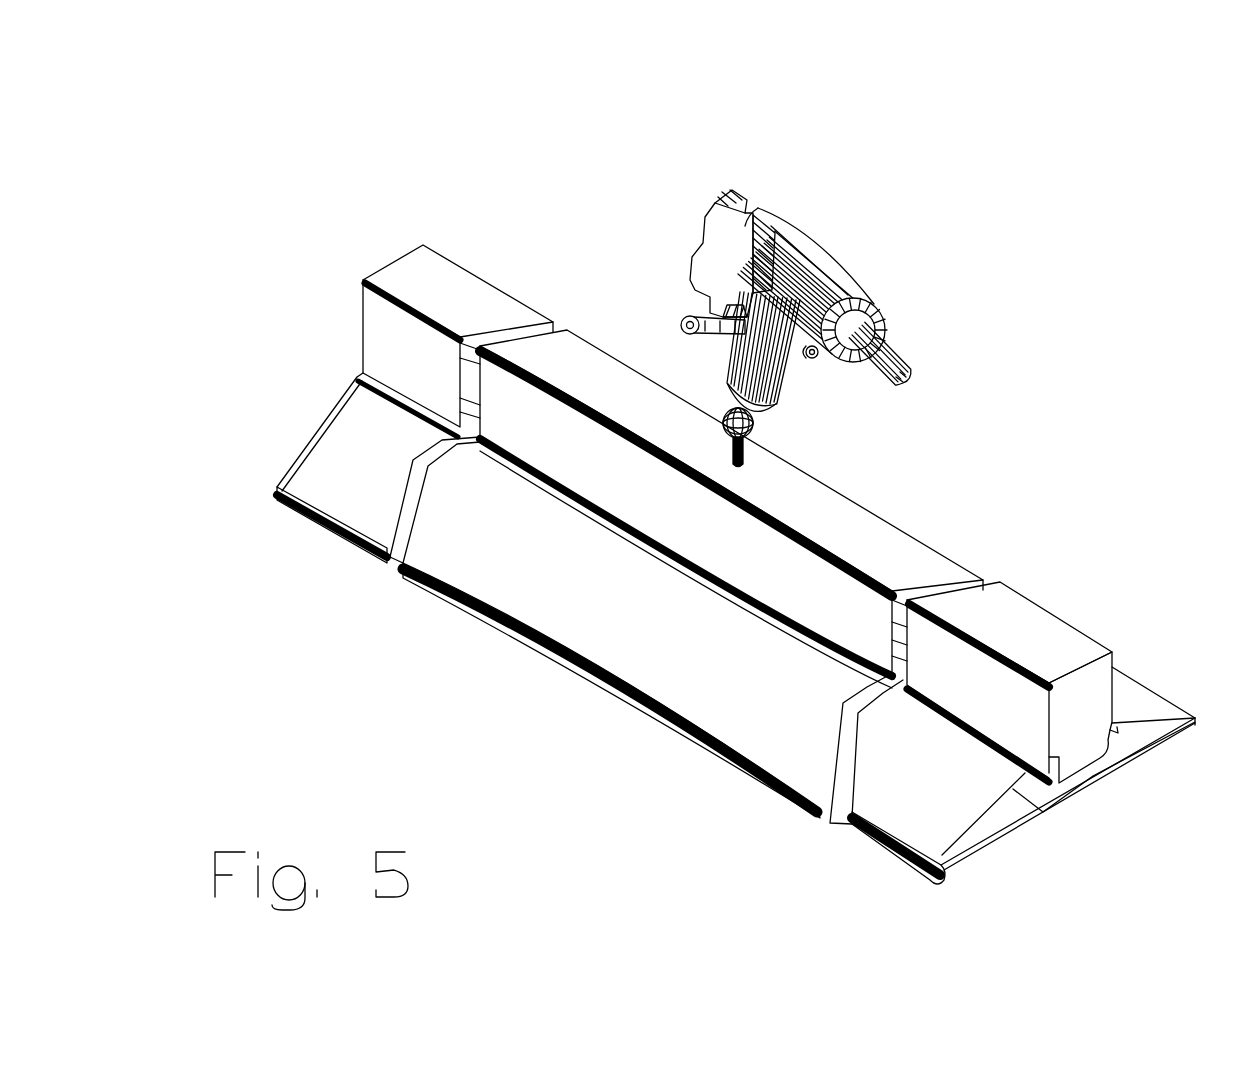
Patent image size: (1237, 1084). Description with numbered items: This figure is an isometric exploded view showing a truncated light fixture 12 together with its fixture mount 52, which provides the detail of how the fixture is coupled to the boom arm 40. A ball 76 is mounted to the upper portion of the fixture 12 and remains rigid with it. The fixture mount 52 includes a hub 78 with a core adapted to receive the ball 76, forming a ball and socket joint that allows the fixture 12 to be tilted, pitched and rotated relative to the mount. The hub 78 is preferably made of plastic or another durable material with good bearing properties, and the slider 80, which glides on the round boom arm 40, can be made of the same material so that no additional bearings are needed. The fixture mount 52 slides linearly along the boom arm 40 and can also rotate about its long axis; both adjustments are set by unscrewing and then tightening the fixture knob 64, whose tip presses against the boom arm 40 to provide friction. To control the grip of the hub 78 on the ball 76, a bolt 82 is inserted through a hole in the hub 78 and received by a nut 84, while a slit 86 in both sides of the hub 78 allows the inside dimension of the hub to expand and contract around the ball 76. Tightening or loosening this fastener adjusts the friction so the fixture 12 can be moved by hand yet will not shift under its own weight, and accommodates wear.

The fixture 12 is at (1020, 428).
The boom arm 40 is at (897, 343).
The fixture mount 52 is at (865, 242).
The fixture knob 64 is at (693, 252).
The ball 76 is at (755, 420).
The hub 78 is at (822, 391).
The slider 80 is at (807, 240).
The bolt 82 is at (687, 323).
The nut 84 is at (818, 360).
The slit 86 is at (787, 402).